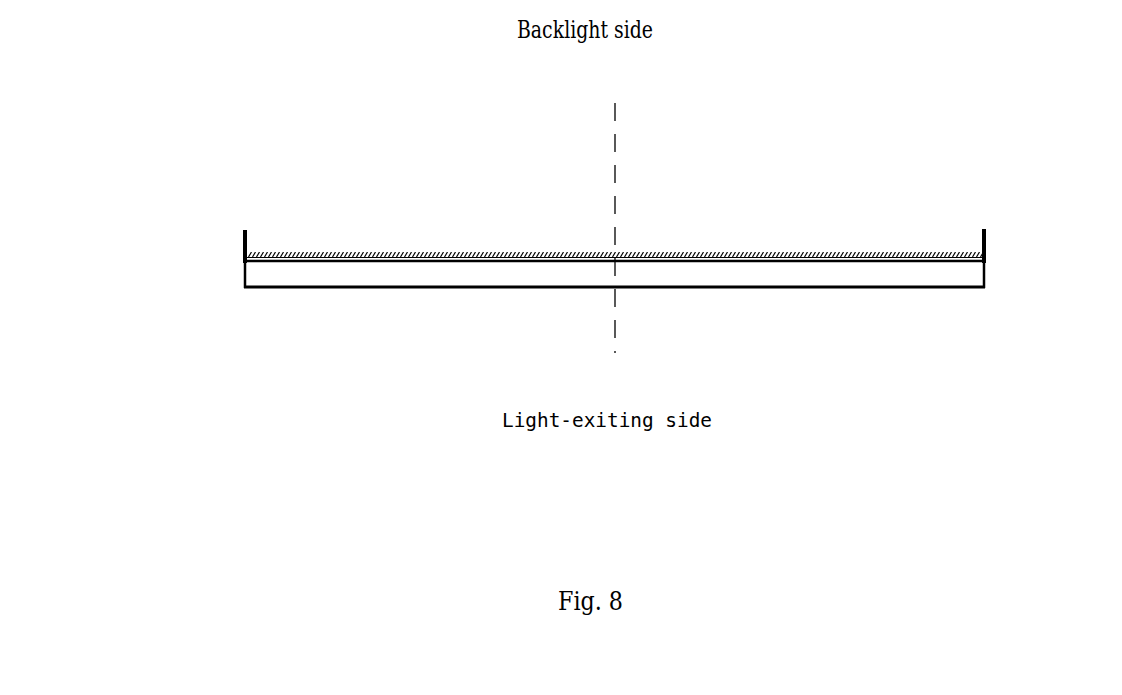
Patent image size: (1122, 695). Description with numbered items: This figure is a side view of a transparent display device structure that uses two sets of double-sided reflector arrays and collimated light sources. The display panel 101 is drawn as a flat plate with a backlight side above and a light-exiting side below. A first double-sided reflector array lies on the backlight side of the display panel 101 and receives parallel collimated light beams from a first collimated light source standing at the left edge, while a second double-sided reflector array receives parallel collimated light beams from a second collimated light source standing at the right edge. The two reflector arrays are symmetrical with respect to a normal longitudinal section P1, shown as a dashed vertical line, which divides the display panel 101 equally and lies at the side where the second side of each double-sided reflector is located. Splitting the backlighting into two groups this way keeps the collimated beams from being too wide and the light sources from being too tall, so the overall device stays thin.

The display panel 101 is at (312, 278).
The normal longitudinal section P1 is at (614, 143).